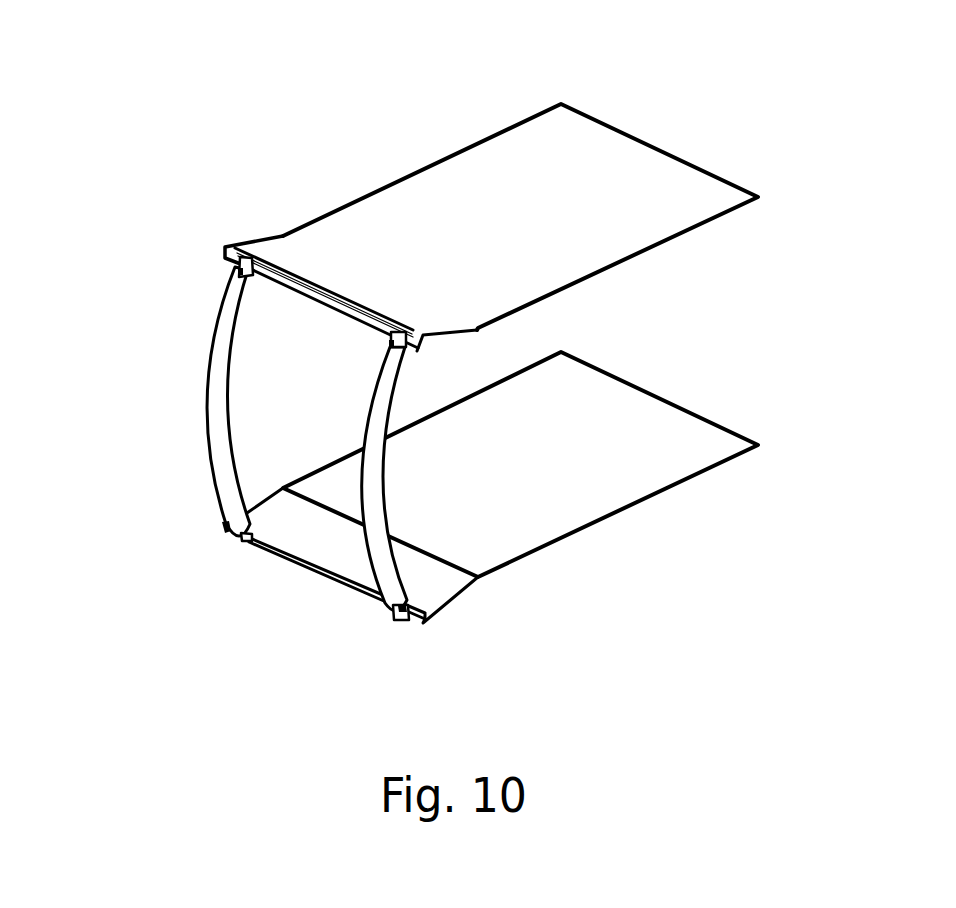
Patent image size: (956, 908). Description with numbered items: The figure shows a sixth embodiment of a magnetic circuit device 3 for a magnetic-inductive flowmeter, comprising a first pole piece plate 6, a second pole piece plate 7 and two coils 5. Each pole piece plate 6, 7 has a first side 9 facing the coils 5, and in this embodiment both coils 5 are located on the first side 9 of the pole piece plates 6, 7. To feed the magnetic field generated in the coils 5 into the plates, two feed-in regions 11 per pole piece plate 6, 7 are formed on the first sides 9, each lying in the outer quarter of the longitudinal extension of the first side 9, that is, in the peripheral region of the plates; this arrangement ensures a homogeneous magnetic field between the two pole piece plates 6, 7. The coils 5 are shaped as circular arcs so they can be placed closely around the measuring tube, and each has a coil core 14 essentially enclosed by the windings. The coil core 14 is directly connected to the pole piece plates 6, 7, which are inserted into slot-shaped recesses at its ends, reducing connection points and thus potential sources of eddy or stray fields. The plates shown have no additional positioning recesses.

The magnetic circuit device 3 is at (435, 372).
The coil 5 is at (227, 488).
The first pole piece plate 6 is at (583, 155).
The second pole piece plate 7 is at (673, 490).
The first side 9 is at (285, 318).
The feed-in region 11 is at (238, 262).
The coil core 14 is at (238, 270).